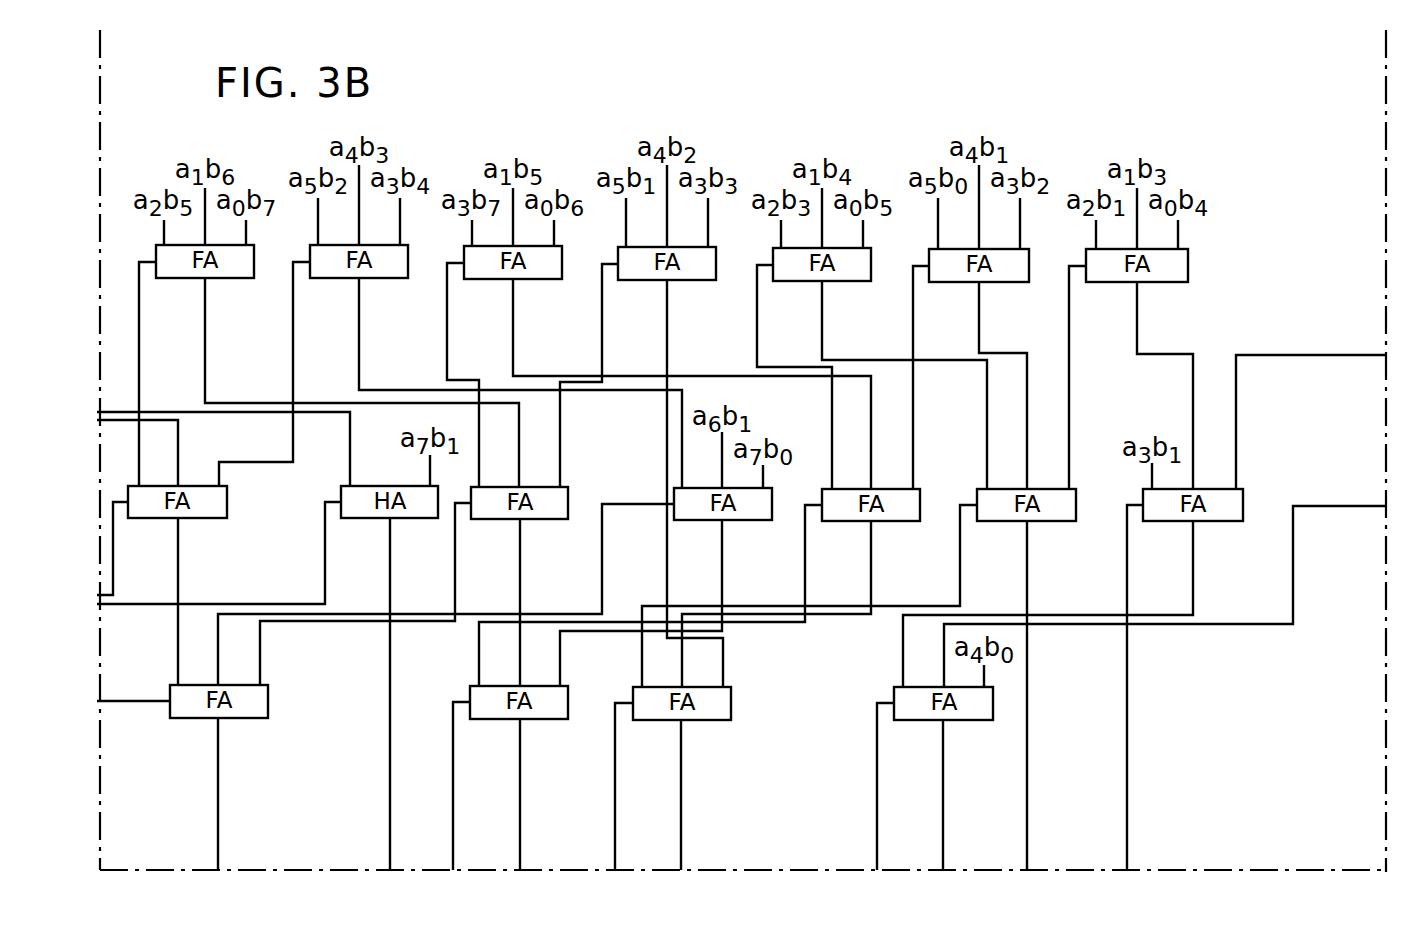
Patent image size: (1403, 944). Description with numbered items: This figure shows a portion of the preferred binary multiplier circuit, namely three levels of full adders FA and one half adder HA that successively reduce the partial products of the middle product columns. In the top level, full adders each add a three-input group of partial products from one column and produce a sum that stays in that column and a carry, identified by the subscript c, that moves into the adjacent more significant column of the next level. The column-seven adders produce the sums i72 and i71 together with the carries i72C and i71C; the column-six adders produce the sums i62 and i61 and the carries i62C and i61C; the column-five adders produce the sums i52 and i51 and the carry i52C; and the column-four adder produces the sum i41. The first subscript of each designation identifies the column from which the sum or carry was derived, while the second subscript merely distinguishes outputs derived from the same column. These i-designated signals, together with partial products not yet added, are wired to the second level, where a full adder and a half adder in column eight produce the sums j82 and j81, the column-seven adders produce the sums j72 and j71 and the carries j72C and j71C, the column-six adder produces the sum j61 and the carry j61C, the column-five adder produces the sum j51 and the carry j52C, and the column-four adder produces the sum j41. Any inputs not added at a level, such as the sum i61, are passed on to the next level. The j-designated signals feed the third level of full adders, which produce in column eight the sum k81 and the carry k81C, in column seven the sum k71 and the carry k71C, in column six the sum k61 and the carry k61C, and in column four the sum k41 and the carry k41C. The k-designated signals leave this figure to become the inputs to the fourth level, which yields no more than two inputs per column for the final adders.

The level L1 sum from column 7 i72 is at (205, 293).
The level L1 sum from column 7 i71 is at (359, 293).
The level L1 sum from column 6 i62 is at (513, 293).
The level L1 sum from column 6 i61 is at (667, 293).
The level L1 sum from column 5 i52 is at (822, 293).
The level L1 sum from column 5 i51 is at (979, 293).
The level L1 sum from column 4 i41 is at (1137, 294).
The level L1 carry from column 7 i72C is at (139, 298).
The level L1 carry from column 7 i71C is at (292, 395).
The level L1 carry from column 6 i62C is at (447, 362).
The level L1 carry from column 6 i61C is at (602, 363).
The level L1 carry from column 5 i52C is at (757, 338).
The level L2 sum from column 8 j82 is at (178, 545).
The level L2 sum from column 8 j81 is at (390, 545).
The level L2 sum from column 7 j72 is at (520, 542).
The level L2 sum from column 7 j71 is at (722, 545).
The level L2 sum from column 6 j61 is at (872, 545).
The level L2 sum from column 5 j51 is at (1027, 545).
The level L2 sum from column 4 j41 is at (1193, 545).
The level L2 carry from column 7 j72C is at (327, 622).
The level L2 carry from column 7 j71C is at (642, 502).
The level L2 carry from column 6 j61C is at (805, 624).
The level L2 carry from column 5 j52C is at (641, 676).
The level L3 sum from column 8 k81 is at (220, 738).
The level L3 carry from column 8 k81C is at (130, 701).
The level L3 sum from column 7 k71 is at (520, 757).
The level L3 carry from column 7 k71C is at (455, 701).
The level L3 sum from column 6 k61 is at (681, 755).
The level L3 carry from column 6 k61C is at (615, 822).
The level L3 sum from column 4 k41 is at (943, 755).
The level L3 carry from column 4 k41C is at (877, 792).